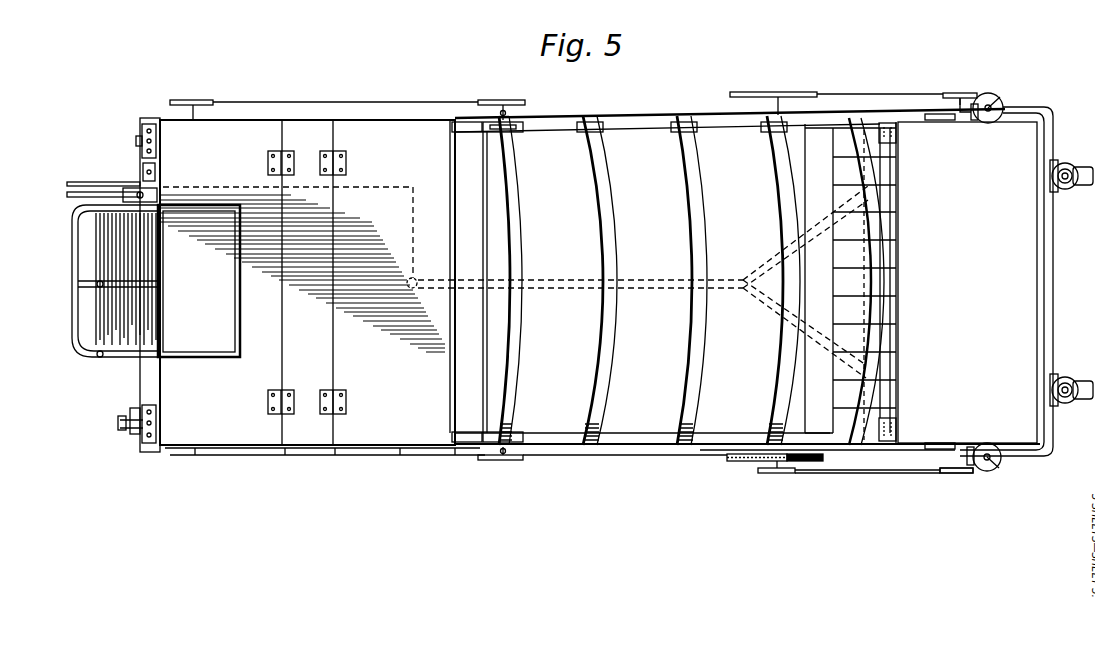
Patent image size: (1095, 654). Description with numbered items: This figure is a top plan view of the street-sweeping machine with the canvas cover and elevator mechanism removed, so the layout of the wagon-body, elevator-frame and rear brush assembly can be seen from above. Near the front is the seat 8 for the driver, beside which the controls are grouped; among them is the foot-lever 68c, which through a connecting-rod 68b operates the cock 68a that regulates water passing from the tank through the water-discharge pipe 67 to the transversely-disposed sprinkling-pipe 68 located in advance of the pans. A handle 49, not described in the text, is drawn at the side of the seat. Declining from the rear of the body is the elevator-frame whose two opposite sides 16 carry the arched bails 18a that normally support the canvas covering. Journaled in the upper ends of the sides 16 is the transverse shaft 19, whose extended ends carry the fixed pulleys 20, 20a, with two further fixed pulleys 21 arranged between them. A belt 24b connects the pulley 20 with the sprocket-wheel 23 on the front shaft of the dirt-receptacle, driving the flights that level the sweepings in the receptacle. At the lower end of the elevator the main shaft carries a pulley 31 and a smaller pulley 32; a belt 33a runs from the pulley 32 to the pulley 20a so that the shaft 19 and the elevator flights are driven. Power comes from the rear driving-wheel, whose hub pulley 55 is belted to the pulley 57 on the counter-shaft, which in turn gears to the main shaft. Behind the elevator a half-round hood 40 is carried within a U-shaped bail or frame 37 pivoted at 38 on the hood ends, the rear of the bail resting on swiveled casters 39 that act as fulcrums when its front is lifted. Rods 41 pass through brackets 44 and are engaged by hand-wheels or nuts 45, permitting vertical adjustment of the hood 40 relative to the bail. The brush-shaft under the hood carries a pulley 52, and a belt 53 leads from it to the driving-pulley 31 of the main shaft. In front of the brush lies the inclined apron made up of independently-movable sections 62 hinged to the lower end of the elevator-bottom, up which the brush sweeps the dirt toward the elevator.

The seat 8 is at (168, 281).
The elevator-frame sides 16 is at (747, 290).
The arched bails 18a is at (514, 240).
The transverse shaft 19 is at (478, 456).
The fixed pulley 20 is at (496, 104).
The fixed pulley 20a is at (505, 462).
The fixed pulleys 21 is at (520, 136).
The sprocket-wheel 23 is at (178, 104).
The belt 24b is at (358, 112).
The pulley 31 is at (800, 462).
The smaller pulley 32 is at (770, 475).
The belt 33a is at (628, 460).
The U-shaped bail or frame 37 is at (1055, 290).
The pivot 38 is at (932, 121).
The swiveled casters 39 is at (1090, 164).
The half-round hood 40 is at (967, 282).
The rods 41 is at (984, 96).
The brackets 44 is at (978, 118).
The hand-wheels or nuts 45 is at (1006, 109).
The handle 49 is at (74, 212).
The pulley 52 is at (956, 474).
The belt 53 is at (878, 474).
The pulley 55 is at (772, 462).
The pulley 57 is at (763, 97).
The apron sections 62 is at (892, 306).
The water-discharge pipe 67 is at (651, 289).
The sprinkling-pipe 68 is at (866, 288).
The cock 68a is at (432, 274).
The connecting-rod 68b is at (220, 187).
The foot-lever 68c is at (100, 174).